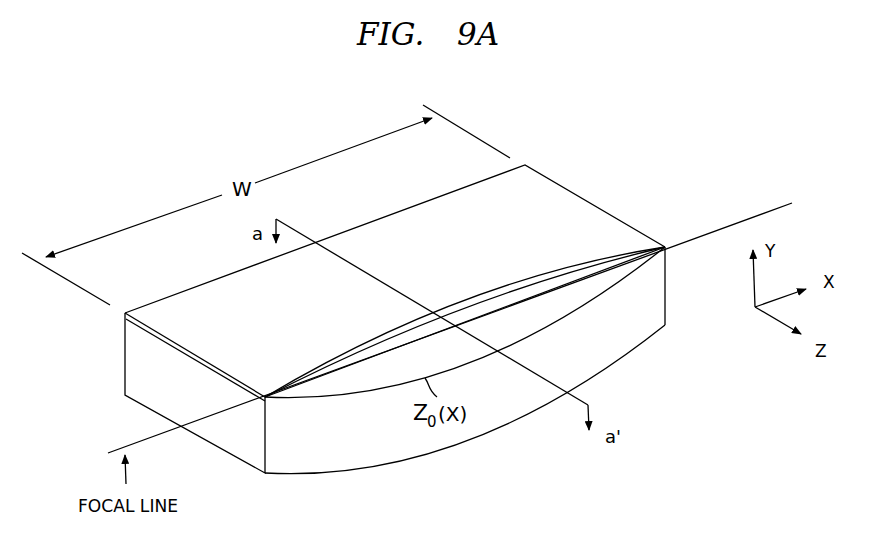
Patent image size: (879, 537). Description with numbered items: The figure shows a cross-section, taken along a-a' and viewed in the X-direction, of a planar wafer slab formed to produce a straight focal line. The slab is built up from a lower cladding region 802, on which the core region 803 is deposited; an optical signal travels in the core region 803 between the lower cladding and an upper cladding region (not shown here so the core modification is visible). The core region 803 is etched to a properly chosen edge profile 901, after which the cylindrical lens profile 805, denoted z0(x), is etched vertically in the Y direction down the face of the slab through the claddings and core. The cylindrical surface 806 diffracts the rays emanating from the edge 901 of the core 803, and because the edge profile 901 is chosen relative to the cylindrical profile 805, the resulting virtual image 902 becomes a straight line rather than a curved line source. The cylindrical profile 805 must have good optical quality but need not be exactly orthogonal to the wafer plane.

The lower cladding region 802 is at (142, 368).
The core region 803 is at (124, 314).
The cylindrical lens profile 805 is at (560, 323).
The cylindrical surface 806 is at (610, 338).
The edge profile of the core region 901 is at (473, 297).
The virtual image 902 is at (477, 318).